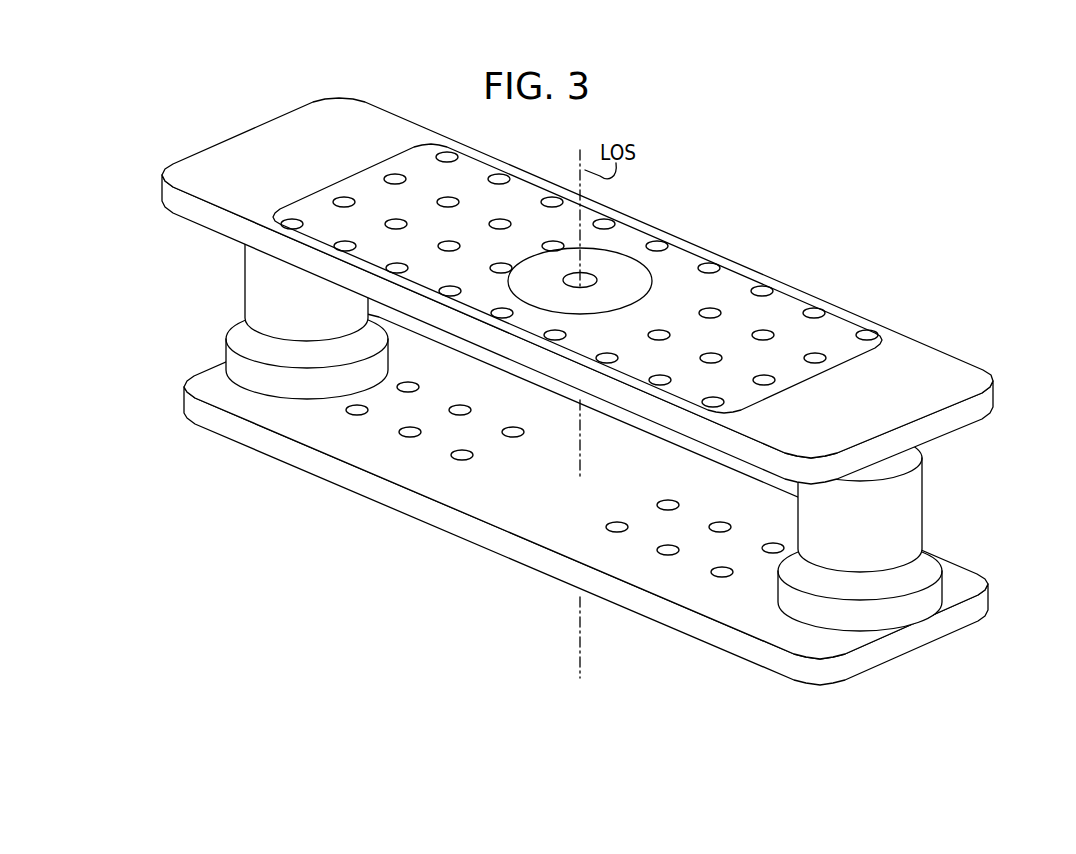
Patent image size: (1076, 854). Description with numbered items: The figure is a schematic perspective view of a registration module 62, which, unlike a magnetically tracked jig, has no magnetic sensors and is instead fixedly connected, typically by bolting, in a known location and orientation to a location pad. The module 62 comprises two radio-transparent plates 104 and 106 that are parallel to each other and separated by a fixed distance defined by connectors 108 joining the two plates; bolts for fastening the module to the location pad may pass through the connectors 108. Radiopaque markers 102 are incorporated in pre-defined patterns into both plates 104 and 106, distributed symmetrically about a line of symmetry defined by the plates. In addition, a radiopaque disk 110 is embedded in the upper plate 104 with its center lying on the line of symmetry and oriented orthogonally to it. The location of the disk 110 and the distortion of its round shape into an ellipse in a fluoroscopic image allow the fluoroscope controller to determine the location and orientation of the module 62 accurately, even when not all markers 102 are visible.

The registration module 62 is at (197, 408).
The radiopaque markers 102 is at (775, 292).
The radio-transparent plate 104 is at (985, 378).
The radio-transparent plate 106 is at (830, 662).
The connectors 108 is at (257, 285).
The radiopaque disk 110 is at (638, 275).